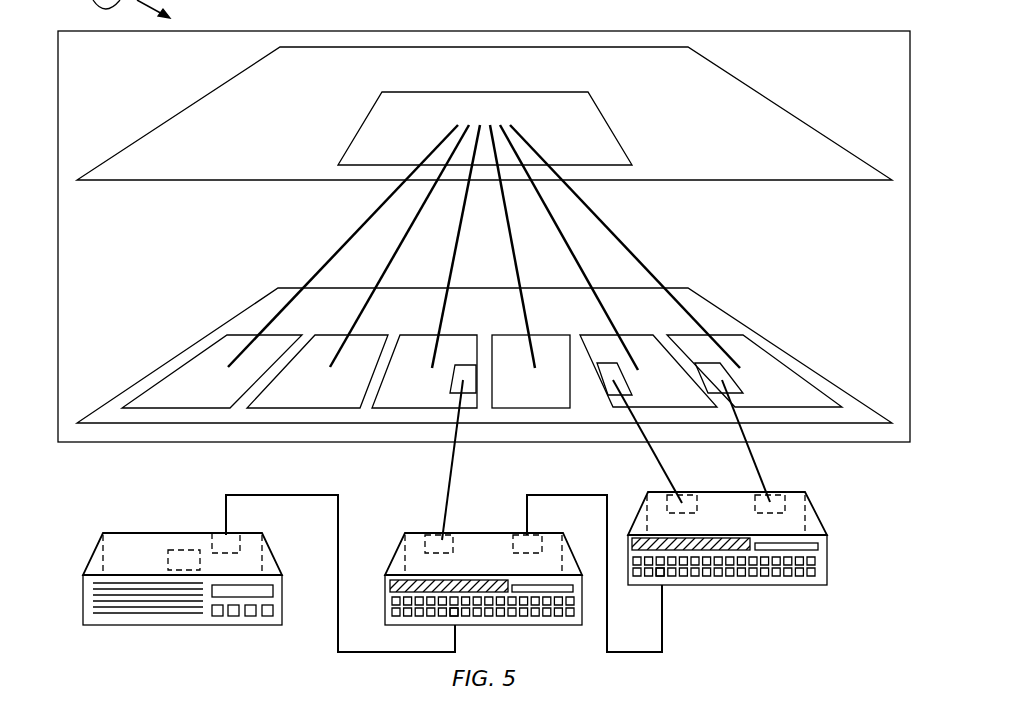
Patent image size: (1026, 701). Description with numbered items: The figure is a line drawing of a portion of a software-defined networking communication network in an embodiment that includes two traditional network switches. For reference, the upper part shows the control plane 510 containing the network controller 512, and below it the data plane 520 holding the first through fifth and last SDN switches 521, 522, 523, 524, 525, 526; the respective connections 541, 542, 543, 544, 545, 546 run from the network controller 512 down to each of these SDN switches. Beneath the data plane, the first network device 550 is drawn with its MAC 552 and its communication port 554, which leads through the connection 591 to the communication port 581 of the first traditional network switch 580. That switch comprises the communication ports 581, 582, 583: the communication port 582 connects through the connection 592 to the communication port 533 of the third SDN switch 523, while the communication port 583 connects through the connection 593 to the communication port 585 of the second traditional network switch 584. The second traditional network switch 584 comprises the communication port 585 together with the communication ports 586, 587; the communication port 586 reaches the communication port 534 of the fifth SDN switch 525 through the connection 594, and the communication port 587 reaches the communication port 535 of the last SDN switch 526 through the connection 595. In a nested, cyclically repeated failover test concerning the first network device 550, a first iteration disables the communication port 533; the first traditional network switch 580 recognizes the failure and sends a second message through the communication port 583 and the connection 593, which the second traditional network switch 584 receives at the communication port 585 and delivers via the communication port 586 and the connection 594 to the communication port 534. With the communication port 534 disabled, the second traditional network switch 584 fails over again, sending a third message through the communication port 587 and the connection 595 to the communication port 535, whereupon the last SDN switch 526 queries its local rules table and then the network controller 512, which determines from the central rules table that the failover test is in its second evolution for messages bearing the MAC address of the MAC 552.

The control plane 510 is at (654, 78).
The network controller 512 is at (579, 123).
The data plane 520 is at (656, 321).
The first SDN switch 521 is at (212, 400).
The second SDN switch 522 is at (324, 400).
The third SDN switch 523 is at (429, 400).
The fourth SDN switch 524 is at (569, 400).
The fifth SDN switch 525 is at (676, 400).
The last SDN switch 526 is at (786, 400).
The communication port 533 is at (452, 395).
The communication port 534 is at (602, 383).
The communication port 535 is at (737, 398).
The connection 541 is at (336, 253).
The connection 542 is at (410, 228).
The connection 543 is at (465, 195).
The connection 544 is at (505, 197).
The connection 545 is at (560, 228).
The connection 546 is at (632, 252).
The first network device 550 is at (83, 580).
The MAC 552 is at (167, 555).
The communication port 554 is at (212, 542).
The first traditional network switch 580 is at (552, 625).
The communication port 581 is at (455, 610).
The communication port 582 is at (455, 542).
The communication port 583 is at (540, 543).
The second traditional network switch 584 is at (827, 560).
The communication port 585 is at (662, 576).
The communication port 586 is at (708, 498).
The communication port 587 is at (797, 492).
The connection 591 is at (292, 497).
The connection 592 is at (450, 494).
The connection 593 is at (550, 493).
The connection 594 is at (648, 448).
The connection 595 is at (745, 447).